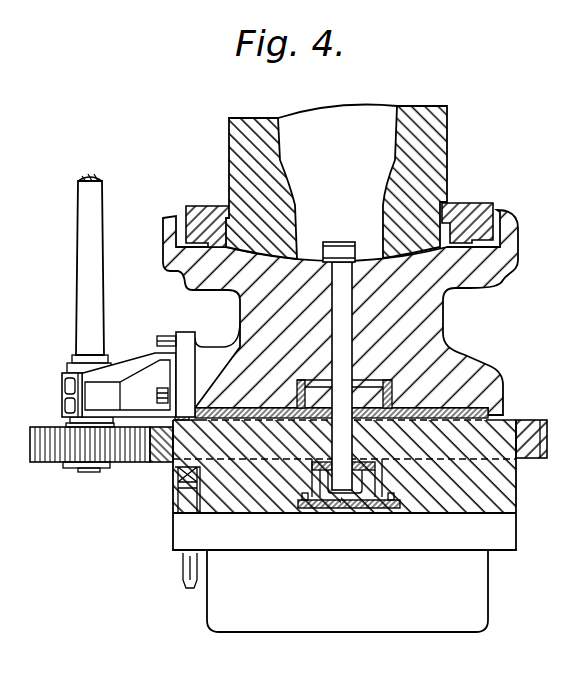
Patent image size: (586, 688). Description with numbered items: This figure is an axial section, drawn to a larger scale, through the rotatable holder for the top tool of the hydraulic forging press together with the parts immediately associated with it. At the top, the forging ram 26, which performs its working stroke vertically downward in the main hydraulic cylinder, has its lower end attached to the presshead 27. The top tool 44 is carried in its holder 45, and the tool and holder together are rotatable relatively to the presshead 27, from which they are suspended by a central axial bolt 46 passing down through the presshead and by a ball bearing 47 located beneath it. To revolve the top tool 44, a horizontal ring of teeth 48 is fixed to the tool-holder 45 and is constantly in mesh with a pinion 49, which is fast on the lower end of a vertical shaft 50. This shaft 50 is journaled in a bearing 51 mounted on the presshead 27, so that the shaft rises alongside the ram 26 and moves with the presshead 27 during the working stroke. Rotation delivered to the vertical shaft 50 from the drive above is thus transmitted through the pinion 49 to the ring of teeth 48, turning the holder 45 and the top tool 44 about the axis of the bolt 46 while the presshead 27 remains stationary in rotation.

The forging ram 26 is at (448, 142).
The presshead 27 is at (431, 322).
The top tool 44 is at (338, 629).
The tool-holder 45 is at (510, 495).
The axial bolt 46 is at (337, 247).
The ball bearing 47 is at (325, 508).
The horizontal ring of teeth 48 is at (543, 458).
The pinion 49 is at (50, 462).
The vertical shaft 50 is at (80, 257).
The bearing 51 is at (62, 393).